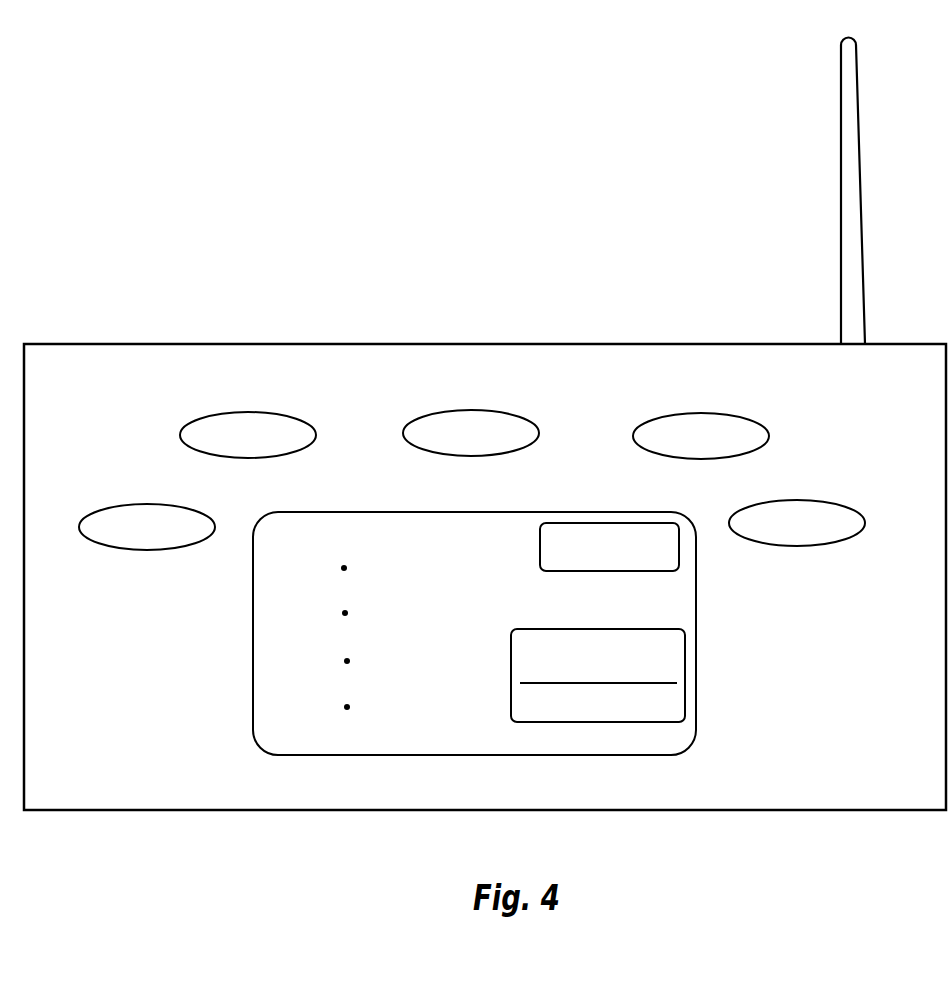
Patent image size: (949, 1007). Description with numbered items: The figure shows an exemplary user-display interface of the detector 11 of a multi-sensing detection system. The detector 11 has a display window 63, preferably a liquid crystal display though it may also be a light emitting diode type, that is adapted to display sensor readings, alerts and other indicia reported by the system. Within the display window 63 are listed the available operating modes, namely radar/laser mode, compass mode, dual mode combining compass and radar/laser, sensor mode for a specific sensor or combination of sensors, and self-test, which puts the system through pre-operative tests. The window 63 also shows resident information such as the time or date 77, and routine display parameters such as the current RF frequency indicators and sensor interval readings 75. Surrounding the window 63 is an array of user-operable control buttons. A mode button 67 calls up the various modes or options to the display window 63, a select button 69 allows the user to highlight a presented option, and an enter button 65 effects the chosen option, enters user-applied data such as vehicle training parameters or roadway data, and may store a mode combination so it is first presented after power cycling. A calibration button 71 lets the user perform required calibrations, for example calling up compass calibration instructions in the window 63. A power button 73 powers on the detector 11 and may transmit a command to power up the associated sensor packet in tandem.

The detector 11 is at (525, 330).
The display window 63 is at (232, 683).
The enter button 65 is at (147, 503).
The mode button 67 is at (252, 412).
The select button 69 is at (472, 410).
The calibration button (CAL) 71 is at (700, 413).
The power button 73 is at (795, 500).
The RF frequency indicators and sensor interval readings 75 is at (686, 680).
The time or date display 77 is at (607, 523).